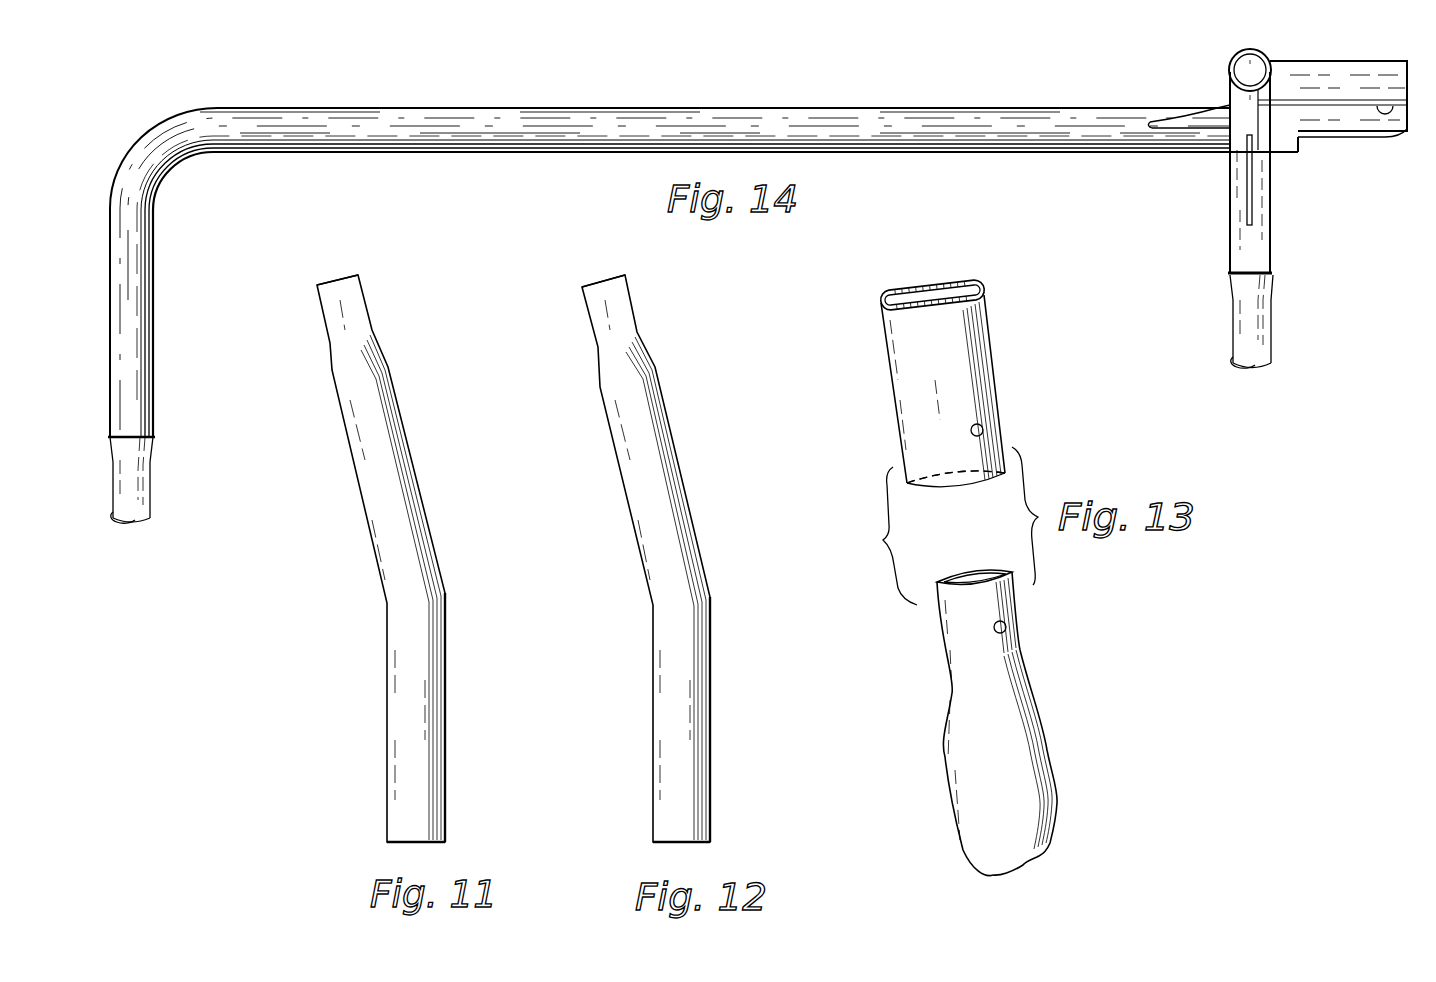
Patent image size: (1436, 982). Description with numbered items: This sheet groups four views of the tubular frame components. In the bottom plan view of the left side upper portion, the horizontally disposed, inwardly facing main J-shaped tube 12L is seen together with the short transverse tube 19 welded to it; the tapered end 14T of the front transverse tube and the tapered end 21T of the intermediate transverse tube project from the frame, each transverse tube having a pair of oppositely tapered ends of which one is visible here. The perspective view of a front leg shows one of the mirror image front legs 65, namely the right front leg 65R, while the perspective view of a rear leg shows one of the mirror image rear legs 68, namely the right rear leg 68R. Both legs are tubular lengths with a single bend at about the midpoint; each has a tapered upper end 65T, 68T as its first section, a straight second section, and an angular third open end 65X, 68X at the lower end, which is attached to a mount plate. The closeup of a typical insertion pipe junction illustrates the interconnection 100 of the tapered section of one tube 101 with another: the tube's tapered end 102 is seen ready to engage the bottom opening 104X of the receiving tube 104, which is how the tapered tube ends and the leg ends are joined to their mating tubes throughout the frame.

In FIG. 14, the left main J-shaped tube 12L is at (537, 108).
In FIG. 14, the tapered end of front tube 14T is at (153, 462).
In FIG. 14, the short transverse tube 19 is at (1272, 222).
In FIG. 14, the tapered end of intermediate transverse tube 21T is at (1272, 283).
In FIG. 11, the front leg 65 is at (338, 465).
In FIG. 11, the tapered upper end of front leg 65T is at (360, 318).
In FIG. 11, the right front leg 65R is at (441, 684).
In FIG. 11, the lower open end of front leg 65X is at (428, 843).
In FIG. 12, the rear leg 68 is at (606, 465).
In FIG. 12, the tapered upper end of rear leg 68T is at (628, 318).
In FIG. 12, the right rear leg 68R is at (706, 684).
In FIG. 12, the lower open end of rear leg 68X is at (693, 843).
In FIG. 13, the interconnection 100 is at (1055, 723).
In FIG. 13, the tube 101 is at (1043, 790).
In FIG. 13, the tapered end 102 is at (1013, 603).
In FIG. 13, the receiving tube 104 is at (995, 385).
In FIG. 13, the bottom opening 104X is at (953, 470).